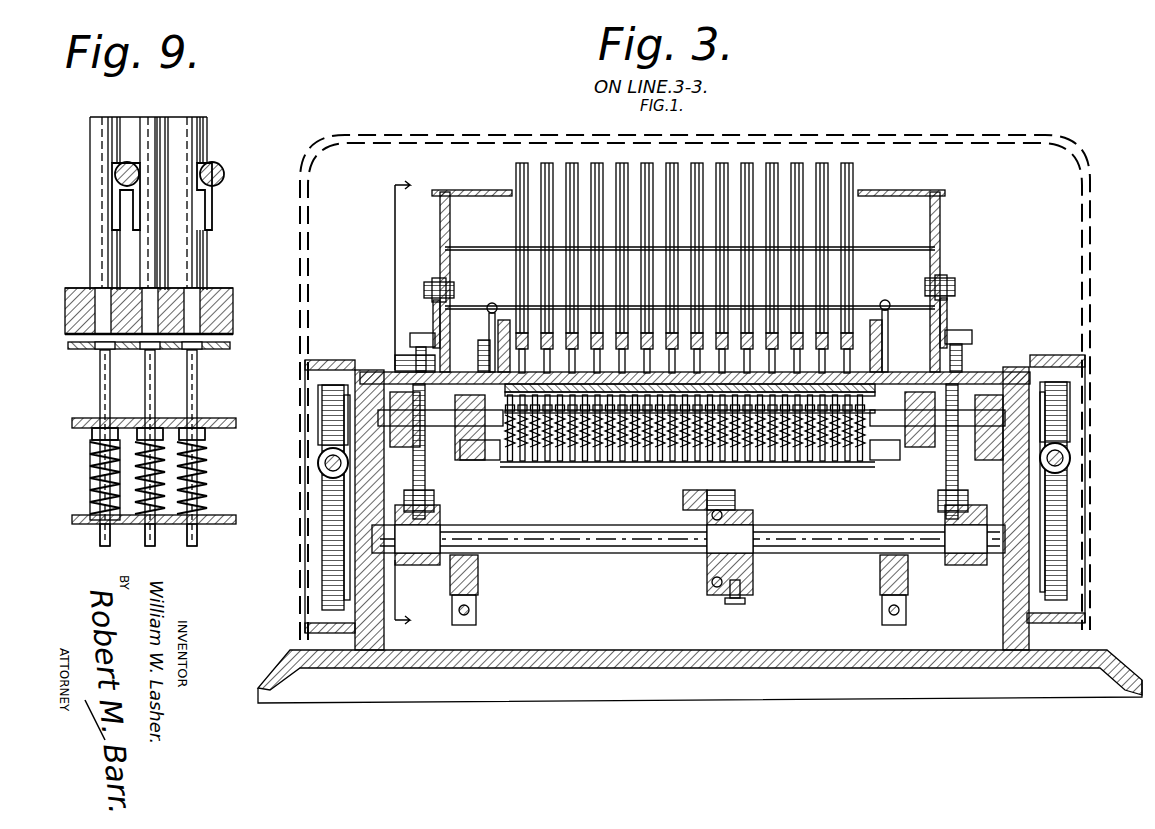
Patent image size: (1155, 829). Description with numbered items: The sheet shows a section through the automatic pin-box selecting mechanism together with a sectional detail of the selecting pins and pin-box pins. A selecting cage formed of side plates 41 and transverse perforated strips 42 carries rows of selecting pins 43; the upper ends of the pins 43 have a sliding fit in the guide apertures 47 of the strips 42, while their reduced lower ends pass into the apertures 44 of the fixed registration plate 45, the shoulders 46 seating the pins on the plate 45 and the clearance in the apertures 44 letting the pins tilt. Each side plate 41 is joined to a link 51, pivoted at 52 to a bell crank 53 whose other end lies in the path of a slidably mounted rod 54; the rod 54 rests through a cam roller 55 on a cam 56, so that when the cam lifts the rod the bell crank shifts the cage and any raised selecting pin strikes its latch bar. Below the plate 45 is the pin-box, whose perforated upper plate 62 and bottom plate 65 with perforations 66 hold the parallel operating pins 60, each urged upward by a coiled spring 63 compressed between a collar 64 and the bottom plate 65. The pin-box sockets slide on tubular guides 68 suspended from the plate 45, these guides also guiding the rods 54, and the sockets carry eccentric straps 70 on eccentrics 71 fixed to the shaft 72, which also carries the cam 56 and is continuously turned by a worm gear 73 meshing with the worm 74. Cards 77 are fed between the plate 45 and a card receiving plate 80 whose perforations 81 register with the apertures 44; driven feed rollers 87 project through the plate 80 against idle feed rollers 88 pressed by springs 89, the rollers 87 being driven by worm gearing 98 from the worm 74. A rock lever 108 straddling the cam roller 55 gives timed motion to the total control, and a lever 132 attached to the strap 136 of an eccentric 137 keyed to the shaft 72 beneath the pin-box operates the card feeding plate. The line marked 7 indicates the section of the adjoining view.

In FIG. 3, the section line 7— 7 is at (398, 401).
In FIG. 3, the side plates 41 is at (480, 214).
In FIG. 3, the transverse perforated strips 42 is at (905, 192).
In FIG. 9, the selecting pins 43 is at (182, 118).
In FIG. 3, the selecting pins 43 is at (605, 163).
In FIG. 9, the apertures 44 is at (212, 322).
In FIG. 9, the registration plate 45 is at (220, 306).
In FIG. 9, the shoulders 46 is at (212, 286).
In FIG. 3, the shoulders 46 is at (1005, 372).
In FIG. 3, the guide apertures 47 is at (513, 192).
In FIG. 3, the link 51 is at (432, 282).
In FIG. 3, the pivot 52 is at (952, 292).
In FIG. 3, the bell crank 53 is at (432, 316).
In FIG. 3, the rod 54 is at (412, 350).
In FIG. 3, the cam roller 55 is at (436, 500).
In FIG. 3, the cam 56 is at (412, 565).
In FIG. 9, the operating pins 60 is at (145, 390).
In FIG. 3, the operating pins 60 is at (572, 462).
In FIG. 9, the upper plate 62 is at (208, 428).
In FIG. 3, the upper plate 62 is at (660, 440).
In FIG. 9, the coiled springs 63 is at (205, 482).
In FIG. 3, the coiled springs 63 is at (603, 462).
In FIG. 9, the collars 64 is at (205, 436).
In FIG. 9, the bottom plate 65 is at (212, 524).
In FIG. 3, the bottom plate 65 is at (842, 455).
In FIG. 9, the perforations 66 is at (145, 526).
In FIG. 3, the tubular guides 68 is at (887, 310).
In FIG. 3, the eccentric straps 70 is at (470, 478).
In FIG. 3, the eccentrics 71 is at (886, 514).
In FIG. 3, the shaft 72 is at (620, 553).
In FIG. 3, the worm gear 73 is at (322, 580).
In FIG. 3, the worm 74 is at (318, 466).
In FIG. 3, the cards 77 is at (500, 350).
In FIG. 9, the card receiving plate 80 is at (80, 343).
In FIG. 3, the card receiving plate 80 is at (395, 366).
In FIG. 9, the perforations 81 is at (105, 349).
In FIG. 3, the driven feed rollers 87 is at (880, 460).
In FIG. 3, the idle feed rollers 88 is at (504, 320).
In FIG. 3, the springs 89 is at (490, 304).
In FIG. 3, the worm gearing 98 is at (333, 385).
In FIG. 3, the rock lever 108 is at (495, 535).
In FIG. 3, the lever 132 is at (690, 490).
In FIG. 3, the strap 136 is at (725, 600).
In FIG. 3, the eccentric 137 is at (707, 575).